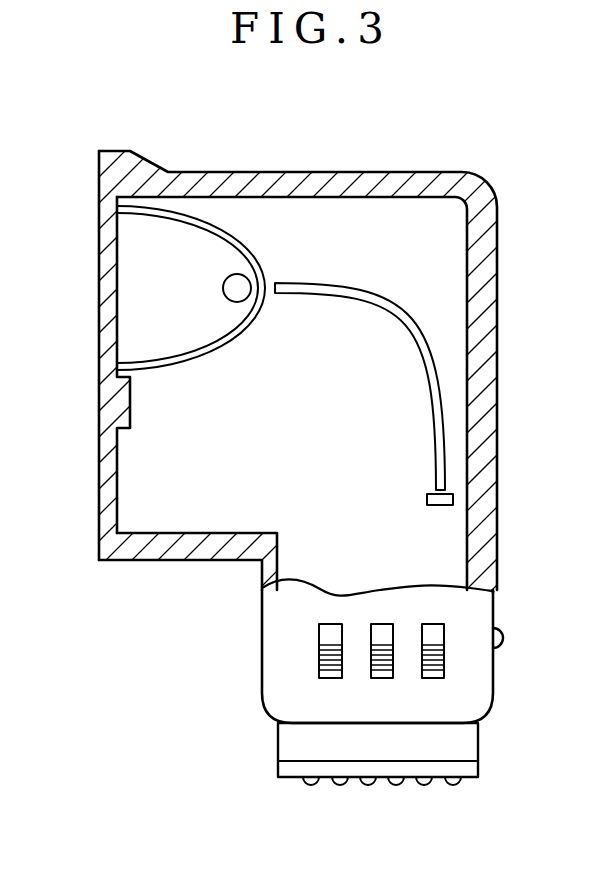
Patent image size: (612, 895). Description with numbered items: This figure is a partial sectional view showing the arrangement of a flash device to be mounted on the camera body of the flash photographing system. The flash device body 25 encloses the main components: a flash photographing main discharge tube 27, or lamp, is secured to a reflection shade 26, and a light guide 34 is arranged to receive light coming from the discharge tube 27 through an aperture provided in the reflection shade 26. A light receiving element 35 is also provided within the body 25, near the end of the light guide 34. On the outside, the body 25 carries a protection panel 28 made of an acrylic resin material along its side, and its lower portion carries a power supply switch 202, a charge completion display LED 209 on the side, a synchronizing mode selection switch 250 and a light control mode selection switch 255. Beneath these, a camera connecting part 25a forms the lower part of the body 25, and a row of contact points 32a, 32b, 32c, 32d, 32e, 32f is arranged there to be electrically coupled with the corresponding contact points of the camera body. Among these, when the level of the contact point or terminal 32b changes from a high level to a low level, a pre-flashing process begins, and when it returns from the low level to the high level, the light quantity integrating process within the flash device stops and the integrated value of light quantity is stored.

The flash device body 25 is at (423, 178).
The camera connecting part 25a is at (283, 745).
The reflection shade 26 is at (245, 240).
The flash photographing main discharge tube 27 is at (225, 293).
The protection panel 28 is at (102, 293).
The light guide 34 is at (405, 310).
The light receiving element 35 is at (430, 505).
The power supply switch 202 is at (445, 648).
The charge completion display LED 209 is at (504, 645).
The synchronizing mode selection switch 250 is at (378, 678).
The light control mode selection switch 255 is at (332, 678).
The contact point 32a is at (311, 785).
The contact point 32b is at (340, 785).
The contact point 32c is at (368, 785).
The contact point 32d is at (396, 785).
The contact point 32e is at (424, 785).
The contact point 32f is at (453, 785).